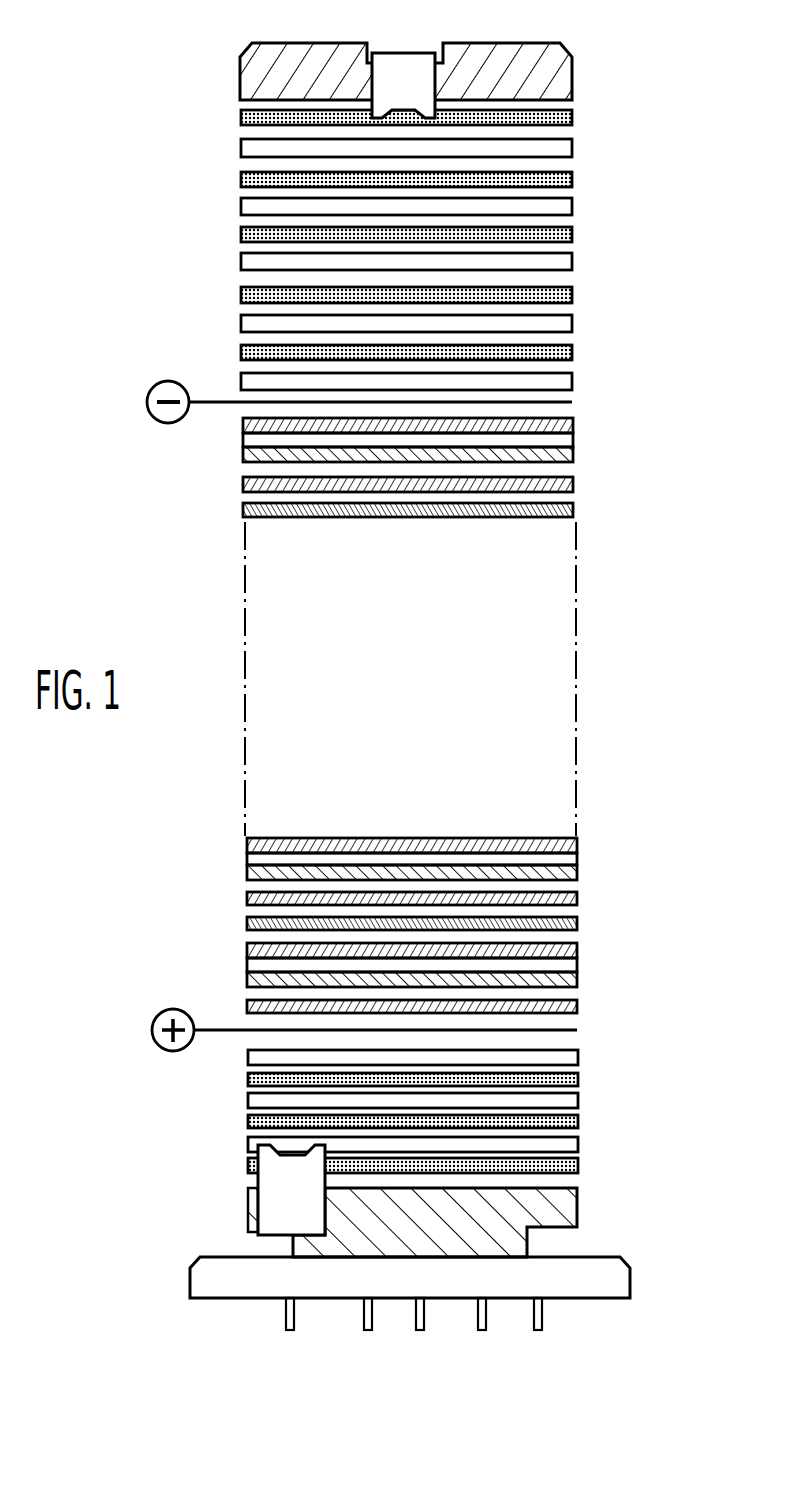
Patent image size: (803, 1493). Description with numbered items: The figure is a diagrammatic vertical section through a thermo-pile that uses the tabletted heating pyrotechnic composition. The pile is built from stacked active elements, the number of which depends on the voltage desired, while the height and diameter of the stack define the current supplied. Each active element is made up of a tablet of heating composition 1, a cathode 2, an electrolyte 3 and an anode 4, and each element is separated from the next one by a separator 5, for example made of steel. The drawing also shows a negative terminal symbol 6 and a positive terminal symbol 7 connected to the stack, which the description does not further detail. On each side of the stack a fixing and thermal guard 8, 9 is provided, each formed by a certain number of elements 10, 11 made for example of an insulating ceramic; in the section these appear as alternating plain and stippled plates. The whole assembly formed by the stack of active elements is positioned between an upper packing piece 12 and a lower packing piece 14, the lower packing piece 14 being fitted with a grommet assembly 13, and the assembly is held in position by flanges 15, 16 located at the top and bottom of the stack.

The tablet of heating composition 1 is at (243, 485).
The cathode 2 is at (572, 455).
The electrolyte 3 is at (243, 438).
The anode 4 is at (572, 425).
The separator 5 is at (572, 508).
The negative terminal 6 is at (146, 402).
The positive terminal 7 is at (151, 1035).
The fixing and thermal guard 8 is at (228, 105).
The fixing and thermal guard 9 is at (236, 1045).
The element 10 is at (572, 147).
The element 11 is at (572, 176).
The upper packing piece 12 is at (243, 72).
The grommet assembly 13 is at (577, 1205).
The lower packing piece 14 is at (630, 1275).
The flange 15 is at (388, 60).
The flange 16 is at (258, 1200).